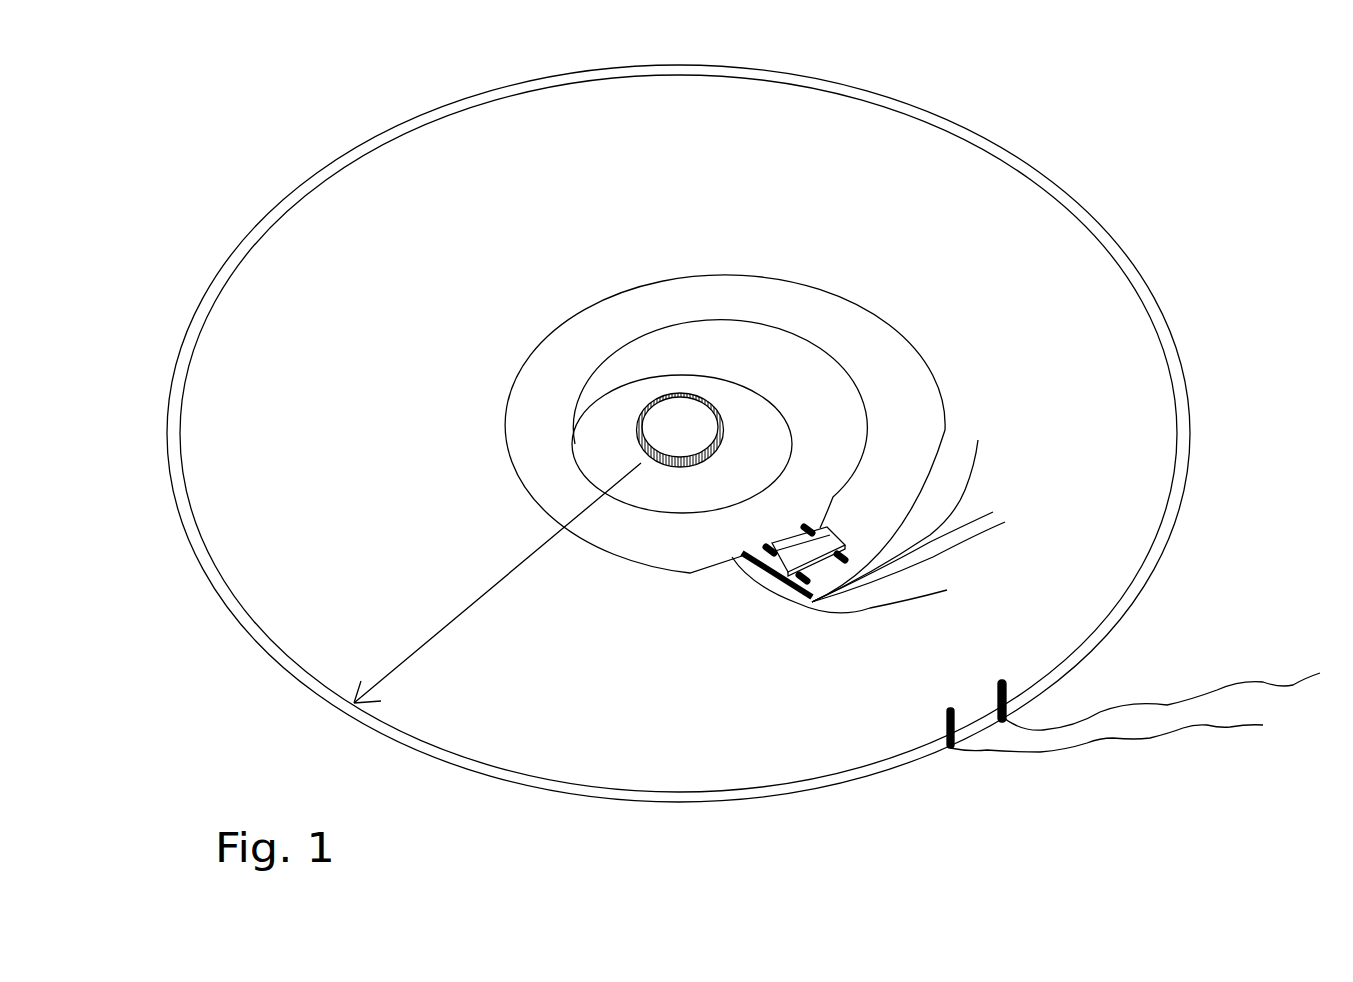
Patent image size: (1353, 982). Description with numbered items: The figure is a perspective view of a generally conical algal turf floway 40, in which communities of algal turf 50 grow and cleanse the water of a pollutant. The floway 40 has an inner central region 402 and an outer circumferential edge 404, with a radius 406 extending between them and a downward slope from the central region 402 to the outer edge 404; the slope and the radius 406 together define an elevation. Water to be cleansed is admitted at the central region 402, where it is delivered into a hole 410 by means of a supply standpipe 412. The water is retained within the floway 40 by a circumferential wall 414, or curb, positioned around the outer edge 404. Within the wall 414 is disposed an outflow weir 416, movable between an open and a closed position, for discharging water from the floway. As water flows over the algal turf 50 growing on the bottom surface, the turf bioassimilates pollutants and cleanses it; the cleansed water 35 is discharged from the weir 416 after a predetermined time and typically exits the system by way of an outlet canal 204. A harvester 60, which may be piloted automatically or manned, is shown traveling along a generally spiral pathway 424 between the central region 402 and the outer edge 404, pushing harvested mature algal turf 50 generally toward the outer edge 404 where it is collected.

The conical algal turf floway 40 is at (230, 172).
The outer circumferential edge 404 is at (1042, 178).
The circumferential wall 414 is at (1190, 447).
The spiral pathway 424 is at (808, 307).
The hole 410 is at (653, 427).
The inner central region 402 is at (687, 430).
The supply standpipe 412 is at (677, 395).
The radius 406 is at (487, 592).
The harvester 60 is at (808, 527).
The algal turf 50 is at (978, 440).
The outflow weir 416 is at (1000, 710).
The cleansed water 35 is at (1105, 728).
The outlet canal 204 is at (1157, 727).